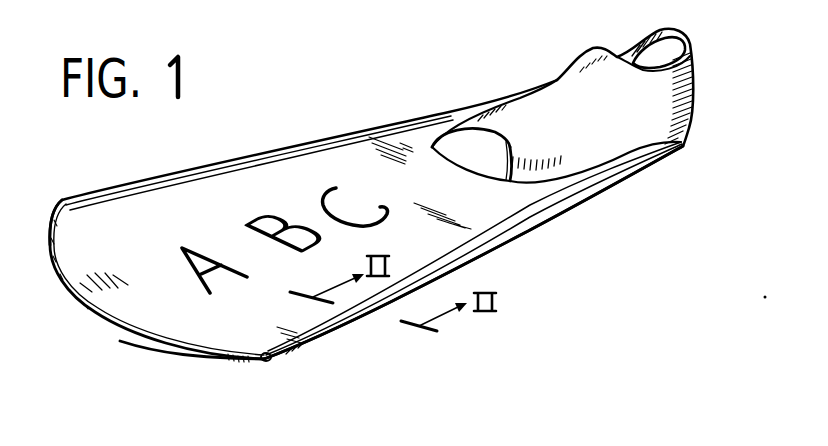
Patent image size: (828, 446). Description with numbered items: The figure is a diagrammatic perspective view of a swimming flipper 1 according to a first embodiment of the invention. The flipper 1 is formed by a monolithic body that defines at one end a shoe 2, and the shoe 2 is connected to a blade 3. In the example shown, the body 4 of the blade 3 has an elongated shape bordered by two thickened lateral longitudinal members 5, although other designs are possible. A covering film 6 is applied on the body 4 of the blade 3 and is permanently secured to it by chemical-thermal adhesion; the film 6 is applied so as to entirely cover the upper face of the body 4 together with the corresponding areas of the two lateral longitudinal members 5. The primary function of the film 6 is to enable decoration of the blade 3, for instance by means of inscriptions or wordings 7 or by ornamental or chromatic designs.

The swimming flipper 1 is at (318, 131).
The shoe 2 is at (692, 97).
The blade 3 is at (352, 336).
The body of the blade 4 is at (200, 360).
The lateral longitudinal members 5 is at (258, 156).
The covering film 6 is at (80, 260).
The inscriptions or wordings 7 is at (330, 190).